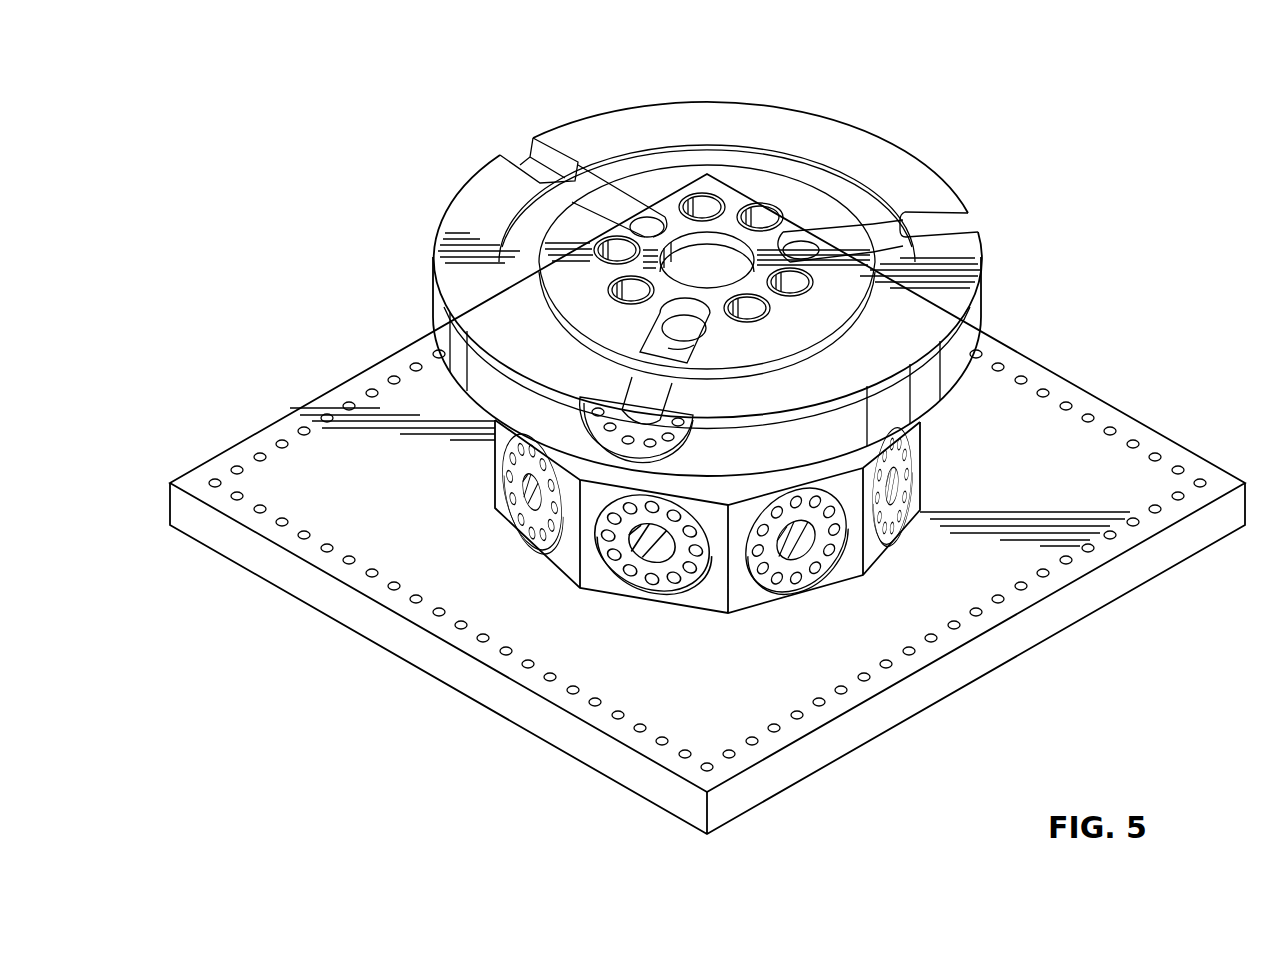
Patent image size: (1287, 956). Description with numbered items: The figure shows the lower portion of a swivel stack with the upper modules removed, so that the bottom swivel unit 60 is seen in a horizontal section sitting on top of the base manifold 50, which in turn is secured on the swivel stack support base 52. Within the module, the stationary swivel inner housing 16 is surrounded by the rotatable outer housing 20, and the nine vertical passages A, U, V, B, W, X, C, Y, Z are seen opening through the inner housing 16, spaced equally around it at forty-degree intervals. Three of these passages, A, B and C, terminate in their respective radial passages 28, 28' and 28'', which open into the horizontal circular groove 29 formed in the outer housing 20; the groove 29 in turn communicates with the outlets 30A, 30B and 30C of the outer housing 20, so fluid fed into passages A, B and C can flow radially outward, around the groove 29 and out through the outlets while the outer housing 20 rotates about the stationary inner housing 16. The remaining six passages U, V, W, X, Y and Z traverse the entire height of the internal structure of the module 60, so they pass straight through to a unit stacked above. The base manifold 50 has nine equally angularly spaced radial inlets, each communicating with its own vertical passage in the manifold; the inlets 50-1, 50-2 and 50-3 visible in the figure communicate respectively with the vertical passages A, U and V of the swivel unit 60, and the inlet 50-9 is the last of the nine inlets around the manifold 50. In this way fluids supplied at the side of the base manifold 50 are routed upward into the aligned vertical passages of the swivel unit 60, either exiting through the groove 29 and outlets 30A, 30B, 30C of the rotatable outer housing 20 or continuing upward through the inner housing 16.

The swivel inner housing 16 is at (750, 173).
The rotatable outer housing 20 is at (967, 182).
The radial passage 28 is at (727, 394).
The radial passage 28' is at (931, 192).
The radial passage 28'' is at (508, 128).
The circular groove 29 is at (885, 297).
The outlet 30A is at (645, 410).
The outlet 30B is at (958, 227).
The outlet 30C is at (535, 162).
The base manifold 50 is at (593, 580).
The radial inlet 50-1 is at (660, 547).
The radial inlet 50-2 is at (800, 540).
The radial inlet 50-3 is at (893, 490).
The radial inlet 50-9 is at (535, 493).
The swivel stack support base 52 is at (850, 650).
The swivel unit 60 is at (968, 115).
The vertical passage A is at (662, 328).
The vertical passage B is at (802, 250).
The vertical passage C is at (615, 213).
The vertical passage U is at (752, 312).
The vertical passage V is at (802, 287).
The vertical passage W is at (764, 214).
The vertical passage X is at (705, 205).
The vertical passage Y is at (617, 245).
The vertical passage Z is at (630, 290).